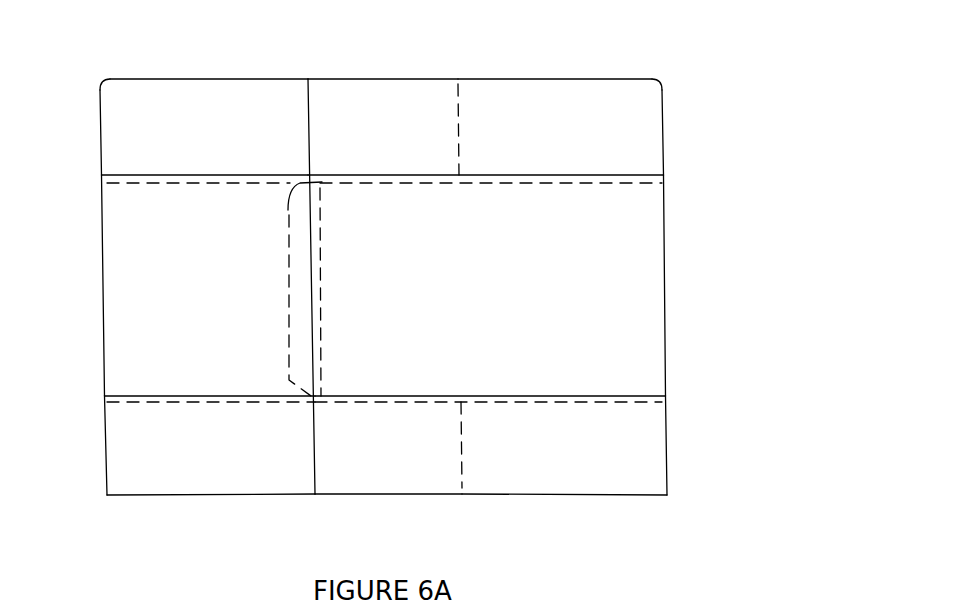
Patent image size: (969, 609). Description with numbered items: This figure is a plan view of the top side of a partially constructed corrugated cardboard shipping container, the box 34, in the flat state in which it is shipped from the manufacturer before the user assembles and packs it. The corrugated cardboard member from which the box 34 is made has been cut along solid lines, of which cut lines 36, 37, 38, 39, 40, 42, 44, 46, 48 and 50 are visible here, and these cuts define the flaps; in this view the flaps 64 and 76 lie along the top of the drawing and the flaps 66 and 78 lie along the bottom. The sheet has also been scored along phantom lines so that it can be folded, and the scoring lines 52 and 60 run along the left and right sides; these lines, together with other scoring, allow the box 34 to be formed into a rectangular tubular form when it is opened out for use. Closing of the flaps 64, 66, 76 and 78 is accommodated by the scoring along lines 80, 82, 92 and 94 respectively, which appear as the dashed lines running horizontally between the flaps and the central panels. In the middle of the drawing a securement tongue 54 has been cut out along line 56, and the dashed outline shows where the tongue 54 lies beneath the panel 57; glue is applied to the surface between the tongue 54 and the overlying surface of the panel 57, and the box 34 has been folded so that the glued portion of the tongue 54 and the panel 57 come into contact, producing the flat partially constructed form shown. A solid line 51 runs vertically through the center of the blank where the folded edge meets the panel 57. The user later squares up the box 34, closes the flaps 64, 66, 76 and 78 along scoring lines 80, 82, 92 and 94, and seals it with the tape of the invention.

The box 34 is at (698, 62).
The cut line 36 is at (305, 98).
The cut line 37 is at (318, 470).
The cut line 38 is at (99, 104).
The cut line 39 is at (106, 468).
The cut line 40 is at (460, 99).
The cut line 42 is at (464, 470).
The cut line 44 is at (663, 112).
The cut line 46 is at (667, 452).
The cut line 48 is at (310, 117).
The cut line 50 is at (317, 472).
The central cut/fold line 51 is at (313, 252).
The scoring line 52 is at (101, 268).
The securement tongue 54 is at (296, 246).
The cut-out line 56 is at (286, 207).
The panel 57 is at (208, 296).
The scoring line 60 is at (665, 282).
The flap 64 is at (206, 145).
The flap 66 is at (211, 465).
The flap 76 is at (614, 150).
The flap 78 is at (614, 460).
The scoring line 80 is at (184, 178).
The scoring line 82 is at (178, 396).
The scoring line 92 is at (523, 177).
The scoring line 94 is at (517, 396).